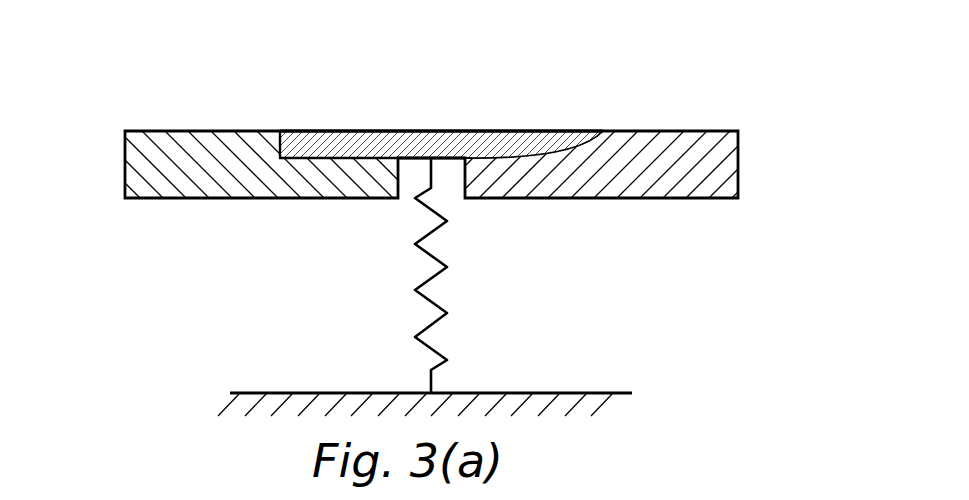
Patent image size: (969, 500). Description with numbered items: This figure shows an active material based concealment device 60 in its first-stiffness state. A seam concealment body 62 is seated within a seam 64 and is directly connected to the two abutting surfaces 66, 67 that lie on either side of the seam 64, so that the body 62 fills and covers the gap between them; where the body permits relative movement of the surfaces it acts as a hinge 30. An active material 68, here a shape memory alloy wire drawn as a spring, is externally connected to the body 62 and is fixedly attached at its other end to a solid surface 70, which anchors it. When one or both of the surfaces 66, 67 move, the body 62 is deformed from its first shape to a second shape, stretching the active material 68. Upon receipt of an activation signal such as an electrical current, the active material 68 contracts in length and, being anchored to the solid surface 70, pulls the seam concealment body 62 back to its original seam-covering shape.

The hinge 30 is at (430, 126).
The active material based concealment device 60 is at (730, 80).
The seam concealment body 62 is at (404, 132).
The seam 64 is at (470, 115).
The abutting surface 66 is at (697, 162).
The abutting surface 67 is at (163, 161).
The active material 68 is at (423, 303).
The solid surface 70 is at (547, 393).